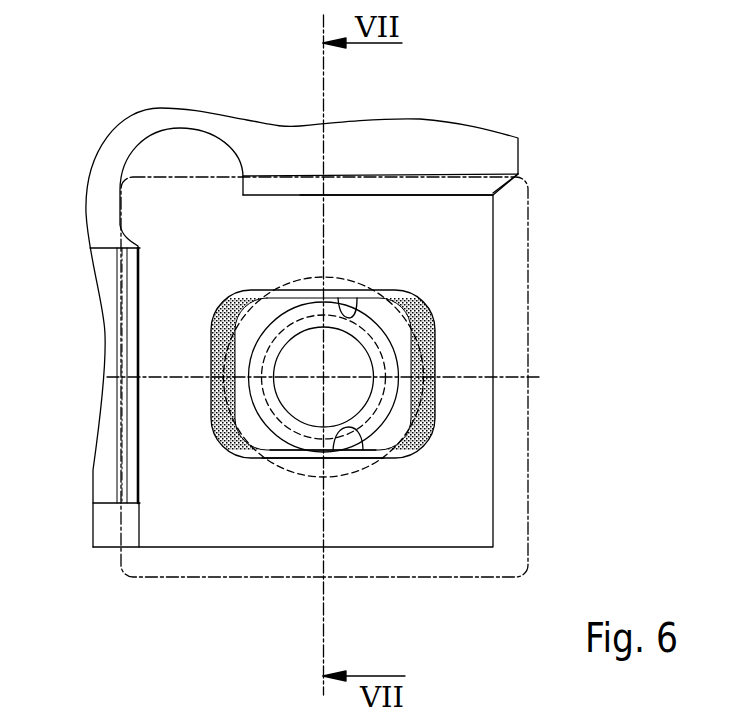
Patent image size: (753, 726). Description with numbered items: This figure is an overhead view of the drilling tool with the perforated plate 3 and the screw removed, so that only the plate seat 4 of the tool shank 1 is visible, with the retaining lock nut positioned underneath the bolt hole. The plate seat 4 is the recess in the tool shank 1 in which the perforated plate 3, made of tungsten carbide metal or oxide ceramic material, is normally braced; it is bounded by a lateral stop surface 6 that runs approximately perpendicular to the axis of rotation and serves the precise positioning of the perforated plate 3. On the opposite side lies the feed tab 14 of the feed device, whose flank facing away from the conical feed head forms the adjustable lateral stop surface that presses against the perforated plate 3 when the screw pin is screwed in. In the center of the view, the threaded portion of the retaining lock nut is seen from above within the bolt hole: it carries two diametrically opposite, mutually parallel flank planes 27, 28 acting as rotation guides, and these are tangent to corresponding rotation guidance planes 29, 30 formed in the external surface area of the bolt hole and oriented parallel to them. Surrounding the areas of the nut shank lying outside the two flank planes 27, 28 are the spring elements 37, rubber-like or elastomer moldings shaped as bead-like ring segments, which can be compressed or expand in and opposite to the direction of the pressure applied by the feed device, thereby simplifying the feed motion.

The tool shank 1 is at (455, 152).
The perforated plate 3 is at (470, 578).
The plate seat 4 is at (441, 255).
The lateral stop surface 6 is at (450, 185).
The feed tab 14 is at (100, 441).
The flank plane 27 is at (283, 291).
The flank plane 28 is at (281, 458).
The rotation guidance plane 29 is at (352, 316).
The rotation guidance plane 30 is at (366, 452).
The spring elements 37 is at (435, 395).